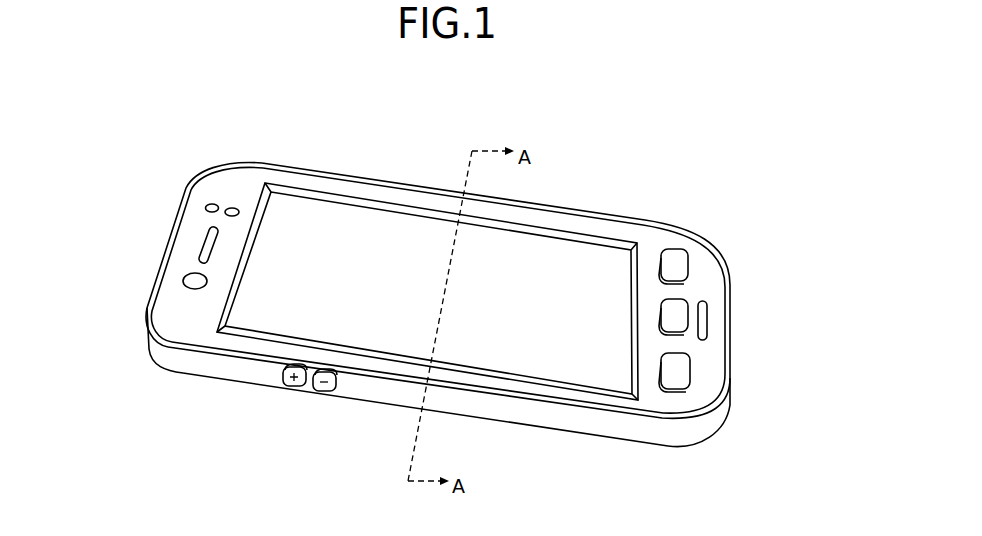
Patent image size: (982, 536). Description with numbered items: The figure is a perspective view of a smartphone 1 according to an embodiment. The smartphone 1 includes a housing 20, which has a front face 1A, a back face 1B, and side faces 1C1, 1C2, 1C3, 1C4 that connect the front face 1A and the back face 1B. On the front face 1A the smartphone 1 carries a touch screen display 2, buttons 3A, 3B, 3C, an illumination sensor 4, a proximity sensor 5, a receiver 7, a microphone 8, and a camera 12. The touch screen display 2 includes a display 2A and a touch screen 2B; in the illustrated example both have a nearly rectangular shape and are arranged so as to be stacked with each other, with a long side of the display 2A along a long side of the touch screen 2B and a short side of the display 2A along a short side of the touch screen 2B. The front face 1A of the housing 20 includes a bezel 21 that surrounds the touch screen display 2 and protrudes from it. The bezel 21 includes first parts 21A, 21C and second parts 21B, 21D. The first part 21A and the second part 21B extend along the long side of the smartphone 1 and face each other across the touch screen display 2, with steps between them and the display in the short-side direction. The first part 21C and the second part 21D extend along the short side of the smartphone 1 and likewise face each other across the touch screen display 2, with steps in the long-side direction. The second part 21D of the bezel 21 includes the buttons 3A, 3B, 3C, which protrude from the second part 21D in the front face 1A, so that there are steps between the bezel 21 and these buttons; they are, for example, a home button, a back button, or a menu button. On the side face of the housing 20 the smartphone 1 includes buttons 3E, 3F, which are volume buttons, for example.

The smartphone 1 is at (498, 125).
The front face 1A is at (173, 308).
The back face 1B is at (202, 378).
The side face 1C1 is at (187, 186).
The side face 1C2 is at (733, 358).
The side face 1C3 is at (502, 408).
The side face 1C4 is at (388, 177).
The touch screen display 2 is at (511, 236).
The display 2A is at (427, 291).
The touch screen 2B is at (427, 291).
The button 3A is at (690, 378).
The button 3B is at (682, 298).
The button 3C is at (675, 248).
The button 3E is at (294, 388).
The button 3F is at (327, 392).
The illumination sensor 4 is at (205, 207).
The proximity sensor 5 is at (232, 207).
The receiver 7 is at (203, 240).
The microphone 8 is at (703, 322).
The camera 12 is at (184, 281).
The housing 20 is at (258, 372).
The bezel 21 is at (213, 183).
The first part 21A is at (577, 395).
The second part 21B is at (328, 185).
The first part 21C is at (188, 325).
The second part 21D is at (649, 267).